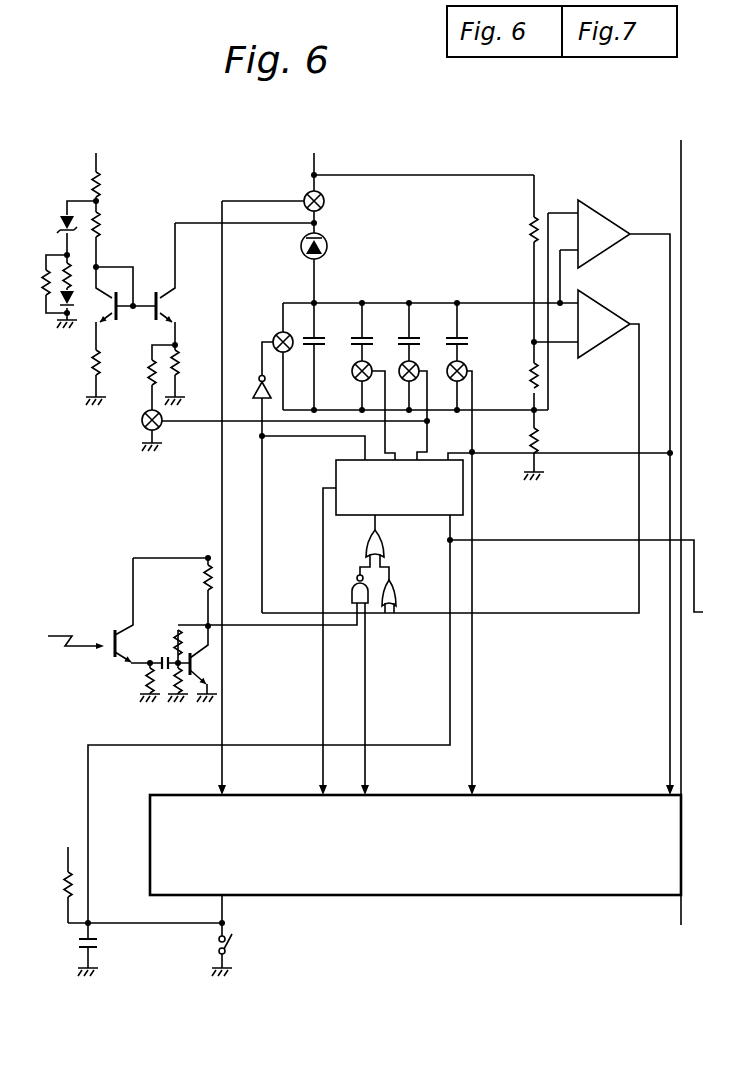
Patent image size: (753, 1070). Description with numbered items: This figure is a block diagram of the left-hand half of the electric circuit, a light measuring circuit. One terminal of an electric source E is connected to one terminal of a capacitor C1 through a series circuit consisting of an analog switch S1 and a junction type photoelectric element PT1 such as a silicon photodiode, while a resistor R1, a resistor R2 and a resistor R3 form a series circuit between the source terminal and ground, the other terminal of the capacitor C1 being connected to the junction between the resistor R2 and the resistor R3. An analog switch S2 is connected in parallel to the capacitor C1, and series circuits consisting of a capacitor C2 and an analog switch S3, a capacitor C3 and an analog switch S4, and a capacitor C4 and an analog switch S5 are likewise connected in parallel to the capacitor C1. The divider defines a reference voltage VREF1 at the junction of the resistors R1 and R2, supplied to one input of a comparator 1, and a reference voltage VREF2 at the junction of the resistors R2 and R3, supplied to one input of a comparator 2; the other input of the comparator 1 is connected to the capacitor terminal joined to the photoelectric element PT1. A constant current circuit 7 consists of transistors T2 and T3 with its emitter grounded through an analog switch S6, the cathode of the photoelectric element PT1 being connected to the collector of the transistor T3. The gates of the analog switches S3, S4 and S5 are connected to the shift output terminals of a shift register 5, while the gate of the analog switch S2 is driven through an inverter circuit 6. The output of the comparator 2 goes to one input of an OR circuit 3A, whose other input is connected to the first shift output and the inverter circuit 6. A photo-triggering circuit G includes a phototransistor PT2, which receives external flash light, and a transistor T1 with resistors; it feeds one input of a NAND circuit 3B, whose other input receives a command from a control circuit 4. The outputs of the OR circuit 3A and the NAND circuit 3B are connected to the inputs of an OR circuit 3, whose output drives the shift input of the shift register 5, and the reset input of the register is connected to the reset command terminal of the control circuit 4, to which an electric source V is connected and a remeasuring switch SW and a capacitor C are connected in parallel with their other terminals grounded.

The comparator 1 is at (626, 497).
The comparator 2 is at (450, 451).
The OR circuit 3 is at (386, 538).
The OR circuit 3A is at (398, 598).
The NAND circuit 3B is at (352, 592).
The control circuit 4 is at (415, 840).
The shift register 5 is at (395, 679).
The inverter circuit 6 is at (258, 383).
The constant current circuit 7 is at (113, 281).
The analog switch S1 is at (325, 201).
The analog switch S2 is at (278, 334).
The analog switch S3 is at (376, 367).
The analog switch S4 is at (423, 367).
The analog switch S5 is at (468, 371).
The analog switch S6 is at (141, 423).
The capacitor C1 is at (322, 340).
The capacitor C2 is at (372, 340).
The capacitor C3 is at (419, 340).
The capacitor C4 is at (470, 342).
The resistor R1 is at (529, 224).
The resistor R2 is at (530, 379).
The resistor R3 is at (529, 437).
The transistor T1 is at (212, 664).
The transistor T2 is at (113, 342).
The transistor T3 is at (168, 324).
The junction type photoelectric element PT1 is at (328, 246).
The phototransistor PT2 is at (122, 642).
The capacitor C is at (100, 945).
The remeasuring switch SW is at (217, 943).
The electric source V is at (63, 827).
The electric source E is at (314, 161).
The photo-triggering circuit G is at (163, 543).
The reference voltage VREF1 is at (532, 340).
The reference voltage VREF2 is at (537, 412).